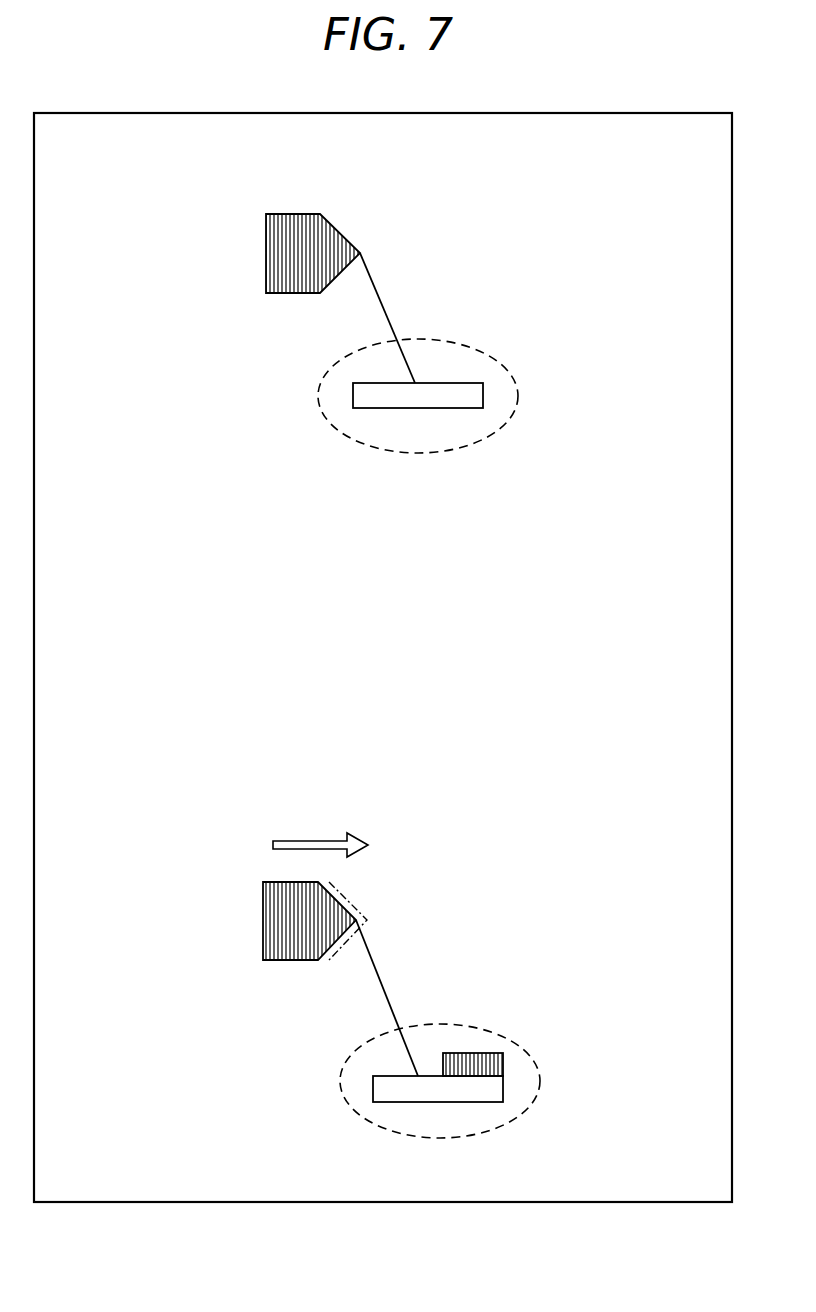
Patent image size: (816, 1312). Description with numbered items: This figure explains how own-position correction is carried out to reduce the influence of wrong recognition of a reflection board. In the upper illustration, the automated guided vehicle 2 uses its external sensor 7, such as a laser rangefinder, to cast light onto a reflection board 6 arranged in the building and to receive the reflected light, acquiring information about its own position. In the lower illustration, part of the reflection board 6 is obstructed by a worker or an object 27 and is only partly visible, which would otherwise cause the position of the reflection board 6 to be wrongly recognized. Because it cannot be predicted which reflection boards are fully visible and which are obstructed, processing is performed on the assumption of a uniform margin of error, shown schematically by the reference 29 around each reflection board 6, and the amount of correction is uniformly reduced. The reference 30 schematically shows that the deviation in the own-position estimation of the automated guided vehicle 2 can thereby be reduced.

The automated guided vehicle 2 is at (293, 214).
The external sensor 7 is at (360, 253).
The reflection board 6 is at (412, 398).
The uniform margin of error 29 is at (478, 348).
The reduction of deviation in own-position estimation 30 is at (353, 898).
The object 27 is at (477, 1052).